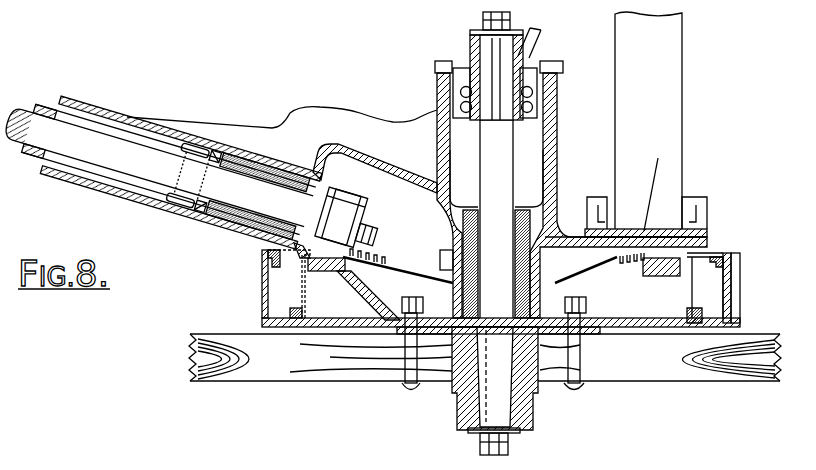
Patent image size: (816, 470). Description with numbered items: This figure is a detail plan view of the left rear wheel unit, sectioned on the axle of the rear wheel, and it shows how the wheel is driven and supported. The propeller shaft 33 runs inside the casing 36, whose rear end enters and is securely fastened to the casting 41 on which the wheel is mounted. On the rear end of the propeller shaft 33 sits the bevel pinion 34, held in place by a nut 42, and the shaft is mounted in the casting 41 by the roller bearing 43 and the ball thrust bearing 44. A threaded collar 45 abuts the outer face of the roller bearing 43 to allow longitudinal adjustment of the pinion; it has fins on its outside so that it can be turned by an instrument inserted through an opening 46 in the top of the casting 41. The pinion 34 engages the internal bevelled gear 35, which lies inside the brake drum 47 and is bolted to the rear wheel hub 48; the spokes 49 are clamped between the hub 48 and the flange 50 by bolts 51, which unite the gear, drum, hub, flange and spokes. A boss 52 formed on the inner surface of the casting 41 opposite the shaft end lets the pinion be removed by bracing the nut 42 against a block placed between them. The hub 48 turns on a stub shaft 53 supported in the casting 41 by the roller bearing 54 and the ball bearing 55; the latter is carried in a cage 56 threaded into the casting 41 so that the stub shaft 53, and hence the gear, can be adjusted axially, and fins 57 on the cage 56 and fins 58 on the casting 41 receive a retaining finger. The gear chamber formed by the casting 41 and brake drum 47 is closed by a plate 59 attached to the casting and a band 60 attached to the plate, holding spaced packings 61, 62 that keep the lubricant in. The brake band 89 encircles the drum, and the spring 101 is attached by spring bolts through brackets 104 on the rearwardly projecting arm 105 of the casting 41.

The propeller shaft 33 is at (22, 110).
The casing 36 is at (60, 97).
The casting 41 is at (127, 117).
The opening 46 is at (181, 150).
The threaded collar 45 is at (221, 150).
The roller bearing 43 is at (290, 172).
The ball thrust bearing 44 is at (312, 250).
The bevel pinion 34 is at (367, 200).
The nut 42 is at (363, 223).
The boss 52 is at (440, 252).
The packing 61 is at (268, 257).
The brake drum 47 is at (262, 292).
The packing 62 is at (290, 313).
The spokes 49 is at (283, 380).
The internal bevelled gear 35 is at (360, 292).
The bolts 51 is at (404, 387).
The rear wheel hub 48 is at (458, 414).
The flange 50 is at (555, 388).
The ball bearing 55 is at (536, 46).
The fins 57 is at (543, 62).
The fins 58 is at (563, 66).
The cage 56 is at (548, 115).
The stub shaft 53 is at (517, 163).
The roller bearing 54 is at (537, 233).
The spring 101 is at (682, 115).
The rearwardly projecting arm 105 is at (658, 158).
The brackets 104 is at (708, 203).
The plate 59 is at (711, 250).
The band 60 is at (738, 277).
The brake band 89 is at (740, 298).